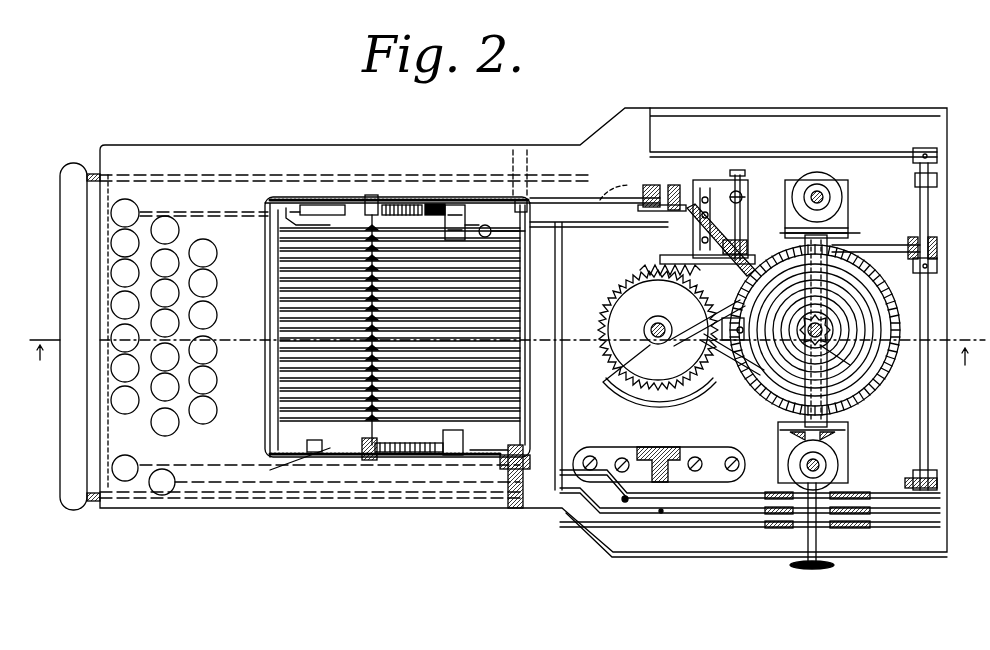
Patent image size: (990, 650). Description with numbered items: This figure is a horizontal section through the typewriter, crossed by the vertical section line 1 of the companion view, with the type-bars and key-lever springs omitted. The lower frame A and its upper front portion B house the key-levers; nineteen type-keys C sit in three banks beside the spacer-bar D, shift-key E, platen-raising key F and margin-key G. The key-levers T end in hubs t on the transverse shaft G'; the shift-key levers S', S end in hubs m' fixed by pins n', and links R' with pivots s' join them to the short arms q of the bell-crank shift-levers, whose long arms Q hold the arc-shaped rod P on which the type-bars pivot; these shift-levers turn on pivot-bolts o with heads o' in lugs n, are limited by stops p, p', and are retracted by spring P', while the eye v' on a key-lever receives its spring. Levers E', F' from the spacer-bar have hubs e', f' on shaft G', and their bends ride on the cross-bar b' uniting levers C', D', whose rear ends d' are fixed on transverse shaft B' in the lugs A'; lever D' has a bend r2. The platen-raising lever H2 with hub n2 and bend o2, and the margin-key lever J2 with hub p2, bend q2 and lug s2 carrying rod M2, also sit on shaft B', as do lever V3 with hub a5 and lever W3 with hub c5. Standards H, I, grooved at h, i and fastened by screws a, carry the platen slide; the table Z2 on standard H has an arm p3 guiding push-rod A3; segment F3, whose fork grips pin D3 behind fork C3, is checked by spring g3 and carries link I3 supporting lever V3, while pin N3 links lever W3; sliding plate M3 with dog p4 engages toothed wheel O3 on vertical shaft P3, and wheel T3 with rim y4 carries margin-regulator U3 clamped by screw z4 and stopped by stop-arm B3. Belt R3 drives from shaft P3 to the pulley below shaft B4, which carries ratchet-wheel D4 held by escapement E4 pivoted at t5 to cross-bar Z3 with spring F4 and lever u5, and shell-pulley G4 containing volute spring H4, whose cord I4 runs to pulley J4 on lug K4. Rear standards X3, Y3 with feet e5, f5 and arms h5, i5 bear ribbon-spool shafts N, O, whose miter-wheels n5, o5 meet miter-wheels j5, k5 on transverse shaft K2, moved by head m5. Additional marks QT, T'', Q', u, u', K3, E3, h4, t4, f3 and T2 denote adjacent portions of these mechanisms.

The space bar D is at (65, 336).
The keys C is at (164, 317).
The type bar frame B is at (382, 327).
The spool N is at (822, 193).
The pulley O is at (826, 465).
The spring wheel B4 is at (890, 325).
The bracket I is at (672, 455).
The band D4 is at (806, 310).
The ratchet wheel O3 is at (612, 300).
The disc T3 is at (674, 353).
The rail A is at (942, 326).
The type bars t is at (520, 350).
The section line 1 is at (506, 345).
The key G is at (125, 468).
The key F is at (162, 482).
The key E is at (146, 193).
The lever E' is at (88, 151).
The lever F' is at (88, 519).
The part s' is at (293, 337).
The part o is at (363, 322).
The ratchet QT is at (402, 205).
The ratchet Q is at (409, 503).
The part T'' is at (438, 331).
The part P is at (472, 306).
The part u is at (495, 219).
The part e' is at (529, 181).
The post s2 is at (535, 490).
The rod M2 is at (562, 360).
The part S' is at (383, 181).
The part R' is at (272, 322).
The part p' is at (356, 334).
The part q is at (330, 452).
The part o' is at (342, 330).
The part n is at (390, 364).
The part v' is at (410, 191).
The part p is at (432, 191).
The part n' is at (539, 300).
The part m' is at (536, 323).
The part u' is at (530, 246).
The part T is at (528, 380).
The part G' is at (572, 411).
The part f' is at (573, 427).
The part b' is at (249, 432).
The part S is at (254, 458).
The part Q' is at (435, 336).
The part P' is at (474, 156).
The part H is at (655, 185).
The lever J4 is at (700, 205).
The frame F3 is at (728, 200).
The post p3 is at (732, 180).
The part g3 is at (742, 195).
The bar I3 is at (658, 258).
The spring p4 is at (648, 272).
The block K3 is at (742, 252).
The part K4 is at (745, 200).
The screws a is at (735, 460).
The part V3 is at (908, 250).
The part h is at (655, 190).
The part Z2 is at (676, 188).
The part D3 is at (705, 190).
The part A3 is at (750, 215).
The part E3 is at (745, 225).
The part h4 is at (750, 235).
The part C3 is at (648, 232).
The part B3 is at (672, 225).
The part N3 is at (668, 240).
The part t4 is at (672, 328).
The part I4 is at (715, 265).
The part f3 is at (702, 265).
The part M3 is at (668, 325).
The hub P3 is at (652, 322).
The block U3 is at (722, 330).
The part z4 is at (720, 344).
The part y4 is at (690, 395).
The arm R3 is at (732, 385).
The part G4 is at (880, 305).
The spring E4 is at (800, 338).
The hub H4 is at (898, 350).
The part u5 is at (832, 345).
The part B' is at (934, 302).
The part n5 is at (812, 182).
The part e5 is at (845, 195).
The part h5 is at (840, 212).
The part j5 is at (845, 225).
The part X3 is at (848, 237).
The part F4 is at (812, 378).
The part t5 is at (812, 393).
The part Z3 is at (815, 408).
The part i5 is at (835, 436).
The part Y3 is at (848, 430).
The part k5 is at (780, 440).
The part f5 is at (778, 458).
The part o5 is at (790, 470).
The part q2 is at (840, 495).
The part p2 is at (912, 490).
The part i is at (660, 455).
The rod J2 is at (762, 500).
The rod D' is at (750, 538).
The rod H2 is at (665, 527).
The part T2 is at (625, 520).
The part o2 is at (805, 515).
The cap m5 is at (815, 568).
The part K2 is at (822, 540).
The part r2 is at (820, 535).
The part n2 is at (940, 505).
The part d' is at (955, 538).
The bracket C' is at (860, 197).
The bracket A' is at (917, 330).
The rail W3 is at (912, 240).
The block a5 is at (937, 245).
The part c5 is at (937, 262).